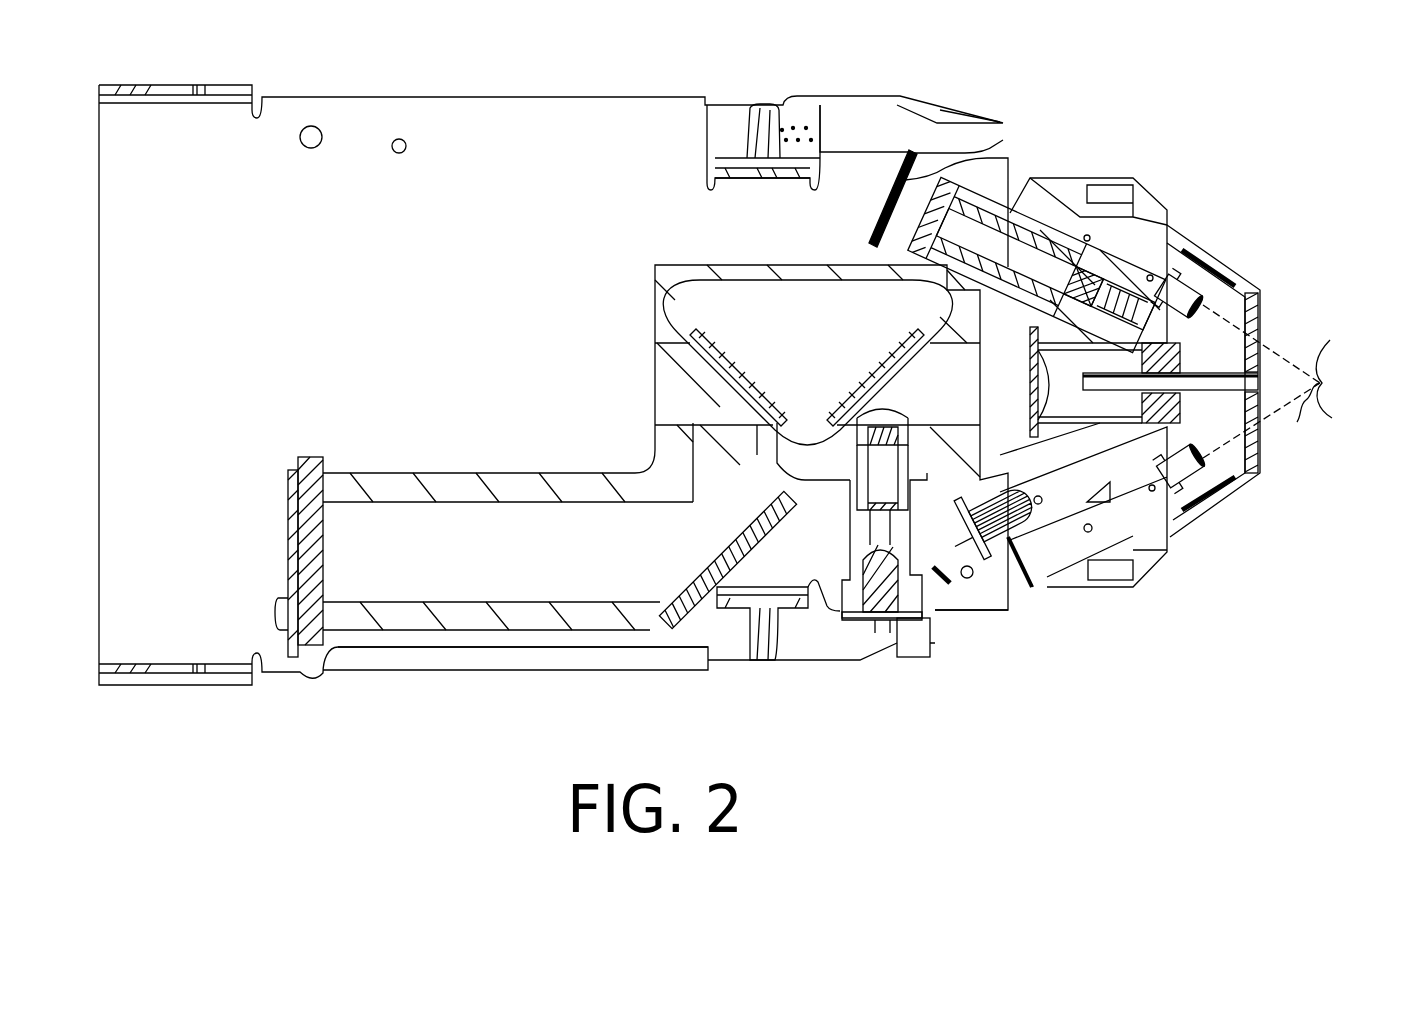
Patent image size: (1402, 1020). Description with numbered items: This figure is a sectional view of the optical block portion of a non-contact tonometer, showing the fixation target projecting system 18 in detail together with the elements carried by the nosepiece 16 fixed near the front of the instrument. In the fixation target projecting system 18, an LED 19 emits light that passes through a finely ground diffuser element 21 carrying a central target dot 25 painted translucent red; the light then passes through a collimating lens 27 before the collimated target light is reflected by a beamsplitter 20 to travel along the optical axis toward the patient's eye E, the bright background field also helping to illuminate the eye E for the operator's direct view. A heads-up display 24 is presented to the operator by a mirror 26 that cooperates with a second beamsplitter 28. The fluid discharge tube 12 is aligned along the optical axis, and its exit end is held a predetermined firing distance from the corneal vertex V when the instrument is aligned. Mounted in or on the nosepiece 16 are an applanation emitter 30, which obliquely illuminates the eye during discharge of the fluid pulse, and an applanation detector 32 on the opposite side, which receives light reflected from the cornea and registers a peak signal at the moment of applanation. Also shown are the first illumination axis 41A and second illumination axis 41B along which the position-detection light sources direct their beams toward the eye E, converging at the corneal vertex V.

The discharge tube 12 is at (1197, 395).
The nosepiece 16 is at (1112, 178).
The fixation target projecting system 18 is at (950, 585).
The LED 19 is at (863, 575).
The beamsplitter 20 is at (895, 380).
The diffuser element 21 is at (857, 518).
The heads-up display 24 is at (323, 540).
The target dot 25 is at (888, 503).
The mirror 26 is at (700, 567).
The collimating lens 27 is at (885, 418).
The beamsplitter 28 is at (717, 363).
The applanation emitter 30 is at (1058, 595).
The applanation detector 32 is at (1003, 147).
The first illumination axis 41A is at (1282, 355).
The second illumination axis 41B is at (1265, 418).
The eye E is at (1340, 343).
The corneal vertex V is at (1302, 419).